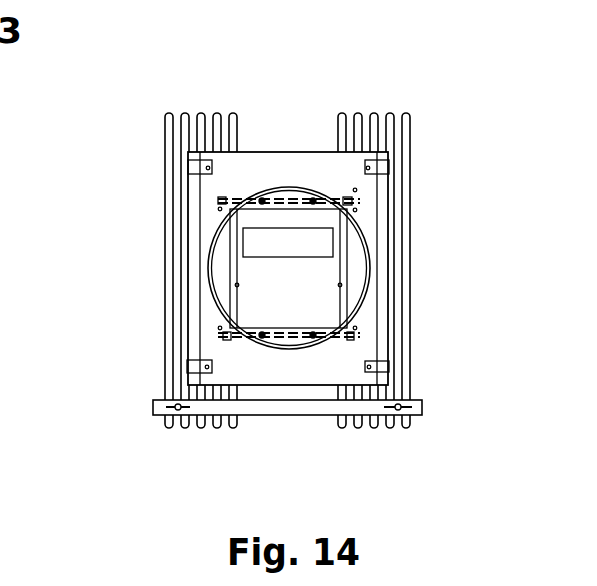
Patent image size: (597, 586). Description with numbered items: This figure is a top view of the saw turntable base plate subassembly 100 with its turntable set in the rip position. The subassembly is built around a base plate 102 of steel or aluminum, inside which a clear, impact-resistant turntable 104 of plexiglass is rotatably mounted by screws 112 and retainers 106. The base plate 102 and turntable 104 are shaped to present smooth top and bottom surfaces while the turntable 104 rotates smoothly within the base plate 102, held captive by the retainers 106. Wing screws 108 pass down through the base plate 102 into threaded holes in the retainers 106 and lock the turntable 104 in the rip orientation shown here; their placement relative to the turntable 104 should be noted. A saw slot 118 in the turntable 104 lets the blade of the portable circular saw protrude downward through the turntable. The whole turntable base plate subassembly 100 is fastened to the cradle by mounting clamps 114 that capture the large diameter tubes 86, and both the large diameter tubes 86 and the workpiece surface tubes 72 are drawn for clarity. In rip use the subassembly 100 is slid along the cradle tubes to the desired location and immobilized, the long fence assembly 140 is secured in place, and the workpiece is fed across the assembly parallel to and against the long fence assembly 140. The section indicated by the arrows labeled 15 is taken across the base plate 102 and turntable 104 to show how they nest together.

The saw turntable base plate subassembly 100 is at (82, 110).
The workpiece surface tubes 72 is at (411, 236).
The large diameter tubes 86 is at (386, 338).
The base plate 102 is at (272, 150).
The turntable 104 is at (287, 212).
The retainers 106 is at (355, 338).
The wing screws 108 is at (227, 337).
The screws 112 is at (264, 206).
The mounting clamps 114 is at (196, 367).
The saw slot 118 is at (328, 252).
The long fence assembly 140 is at (272, 415).
The section line for FIG. 15 is at (425, 497).